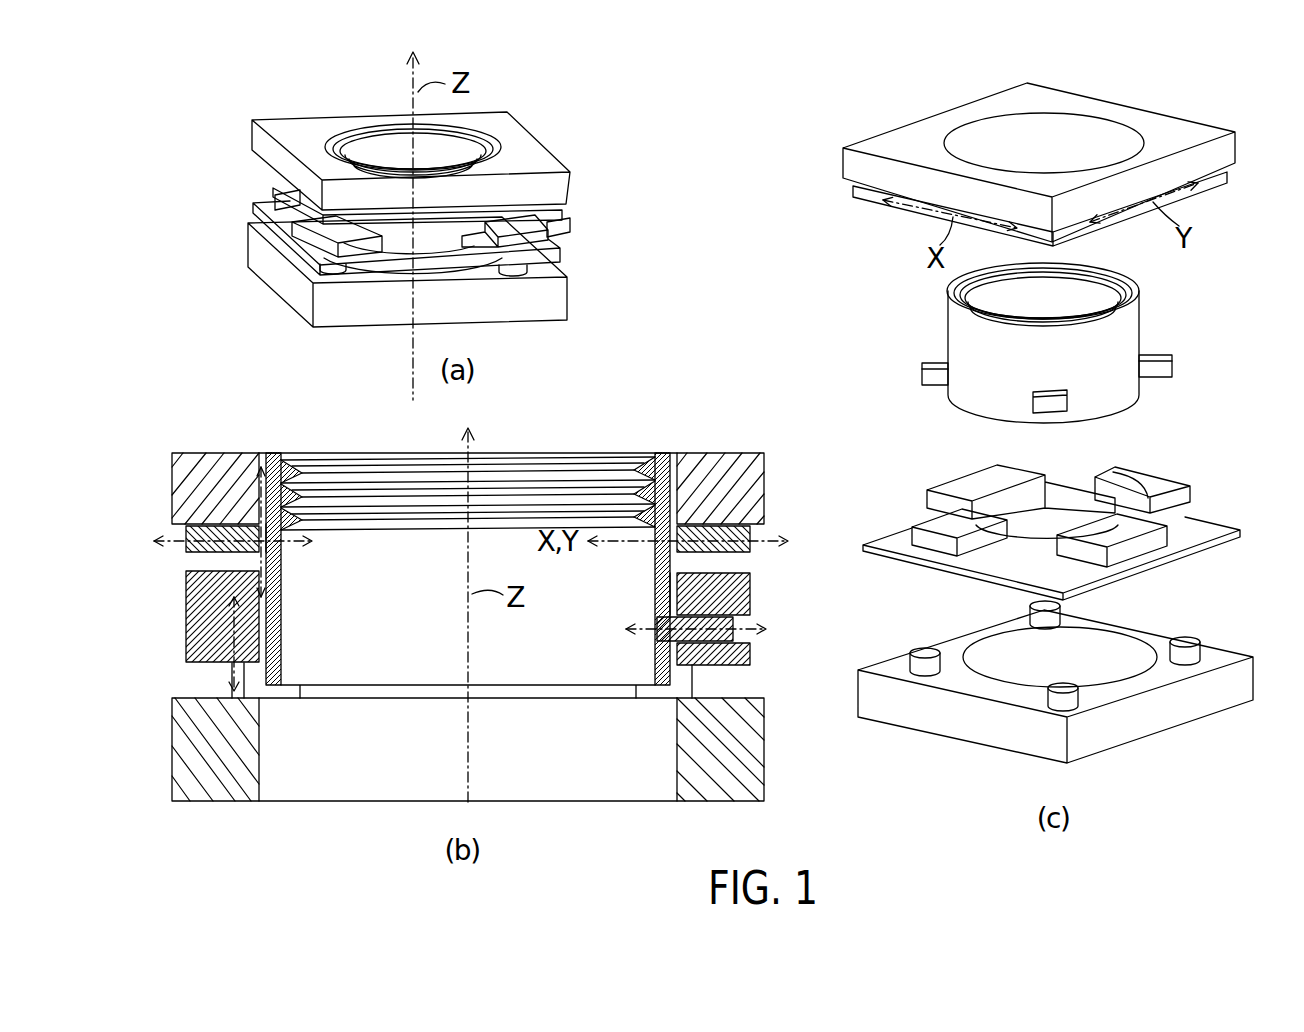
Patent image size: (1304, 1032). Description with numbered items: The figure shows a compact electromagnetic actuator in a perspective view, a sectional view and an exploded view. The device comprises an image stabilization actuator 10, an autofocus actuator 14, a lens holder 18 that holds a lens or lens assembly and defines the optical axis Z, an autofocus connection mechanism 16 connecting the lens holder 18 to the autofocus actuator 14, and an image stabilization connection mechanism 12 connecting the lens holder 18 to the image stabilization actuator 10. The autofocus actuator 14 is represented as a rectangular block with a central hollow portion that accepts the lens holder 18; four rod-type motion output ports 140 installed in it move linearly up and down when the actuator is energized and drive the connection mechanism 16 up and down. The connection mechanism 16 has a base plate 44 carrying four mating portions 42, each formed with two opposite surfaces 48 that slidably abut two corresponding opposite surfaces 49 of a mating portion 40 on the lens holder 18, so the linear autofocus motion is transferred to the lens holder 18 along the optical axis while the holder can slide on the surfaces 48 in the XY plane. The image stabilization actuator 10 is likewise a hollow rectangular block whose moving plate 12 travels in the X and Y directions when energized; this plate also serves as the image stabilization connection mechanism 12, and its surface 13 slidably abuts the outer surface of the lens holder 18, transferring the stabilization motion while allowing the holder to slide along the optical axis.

The image stabilization (IS) actuator 10 is at (527, 136).
The moving plate (IS connection mechanism) 12 is at (562, 212).
The surface 13 is at (267, 549).
The autofocus (AF) actuator 14 is at (680, 509).
The autofocus (AF) connection mechanism 16 is at (722, 446).
The lens holder 18 is at (276, 453).
The mating portion 40 is at (750, 637).
The mating mechanism (mating portion) 42 is at (750, 590).
The base plate 44 is at (1223, 545).
The opposite surfaces 48 is at (735, 619).
The opposite surfaces 49 is at (673, 611).
The rod-type motion output port 140 is at (918, 648).